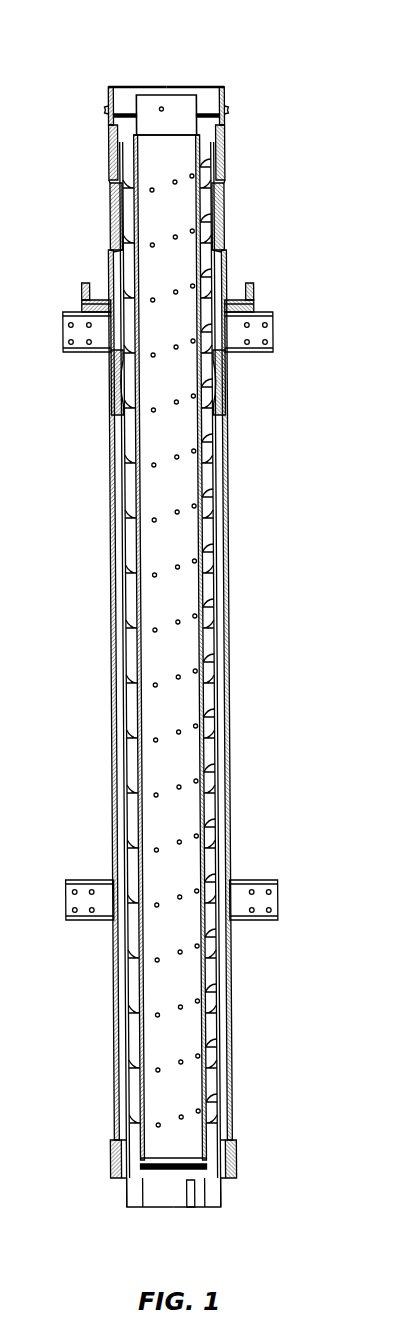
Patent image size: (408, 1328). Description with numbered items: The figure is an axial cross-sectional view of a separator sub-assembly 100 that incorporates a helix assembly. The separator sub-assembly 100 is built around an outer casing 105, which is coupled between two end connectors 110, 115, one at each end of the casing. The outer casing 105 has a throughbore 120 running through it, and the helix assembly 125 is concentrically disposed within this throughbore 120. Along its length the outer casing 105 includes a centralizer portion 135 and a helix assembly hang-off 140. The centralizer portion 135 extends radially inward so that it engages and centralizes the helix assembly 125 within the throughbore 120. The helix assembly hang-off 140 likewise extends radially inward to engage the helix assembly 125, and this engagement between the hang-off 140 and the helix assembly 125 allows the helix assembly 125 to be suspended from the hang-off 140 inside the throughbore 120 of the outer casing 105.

The separator sub-assembly 100 is at (224, 46).
The outer casing 105 is at (228, 555).
The end connector 110 is at (238, 1163).
The end connector 115 is at (233, 100).
The throughbore 120 is at (219, 476).
The helix assembly 125 is at (226, 640).
The centralizer portion 135 is at (221, 391).
The helix assembly hang-off 140 is at (228, 222).